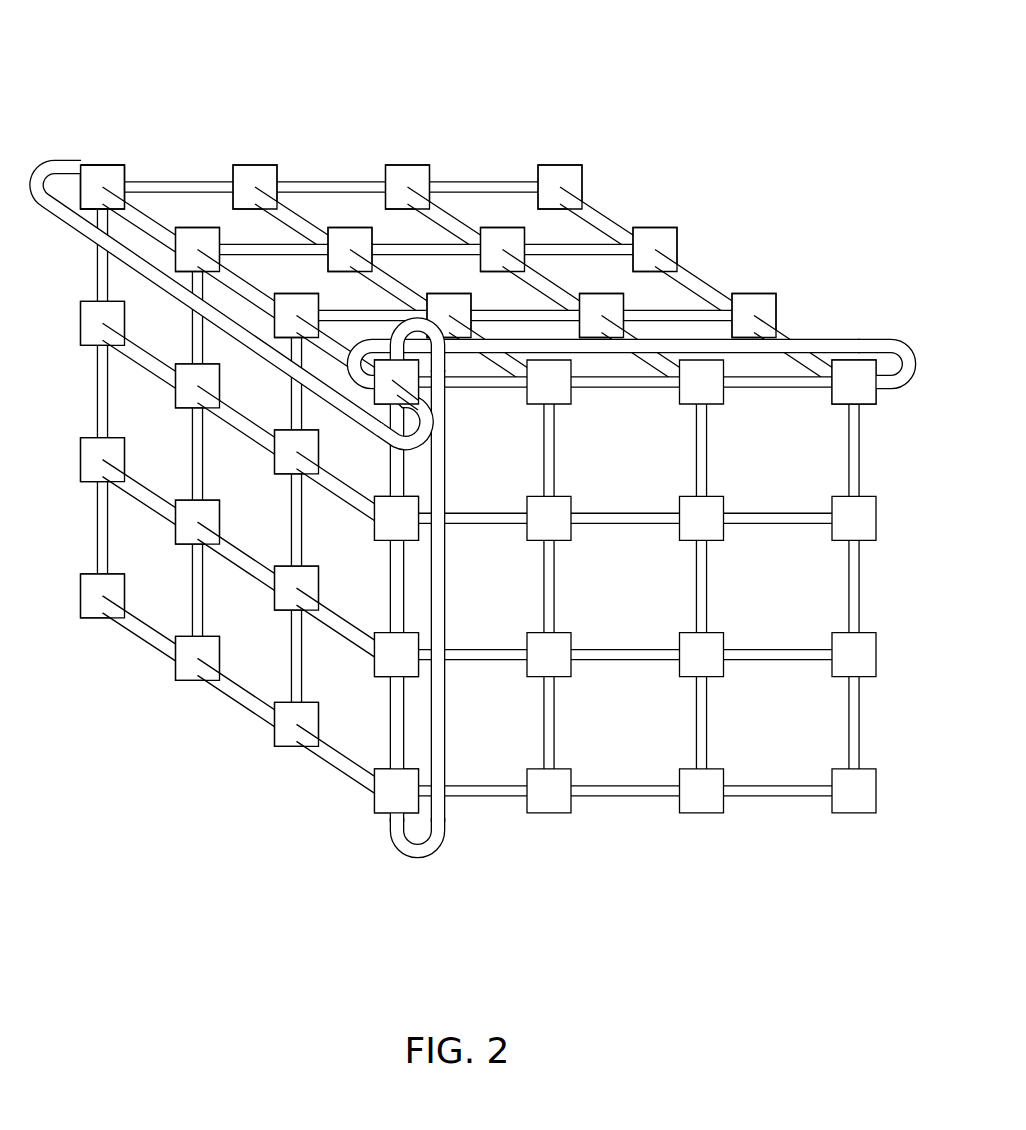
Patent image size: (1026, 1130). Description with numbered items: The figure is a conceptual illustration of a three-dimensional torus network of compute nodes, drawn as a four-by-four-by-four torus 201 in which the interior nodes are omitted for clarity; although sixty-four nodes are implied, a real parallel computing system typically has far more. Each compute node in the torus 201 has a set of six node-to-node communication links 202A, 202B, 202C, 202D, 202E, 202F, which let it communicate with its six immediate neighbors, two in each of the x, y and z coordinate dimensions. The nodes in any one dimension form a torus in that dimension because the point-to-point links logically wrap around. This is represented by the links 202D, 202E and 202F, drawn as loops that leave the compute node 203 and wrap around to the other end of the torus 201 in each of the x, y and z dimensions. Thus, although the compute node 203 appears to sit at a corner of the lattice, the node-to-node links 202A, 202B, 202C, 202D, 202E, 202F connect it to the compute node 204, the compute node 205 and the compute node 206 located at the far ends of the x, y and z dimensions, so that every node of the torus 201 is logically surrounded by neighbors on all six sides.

The torus 201 is at (629, 89).
The node-to-node communication link 202A is at (467, 388).
The node-to-node communication link 202B is at (404, 472).
The node-to-node communication link 202C is at (392, 322).
The node-to-node communication link 202D is at (872, 338).
The node-to-node communication link 202E is at (418, 859).
The node-to-node communication link 202F is at (53, 158).
The compute node 203 is at (343, 408).
The compute node 204 is at (103, 164).
The compute node 205 is at (857, 390).
The compute node 206 is at (385, 800).